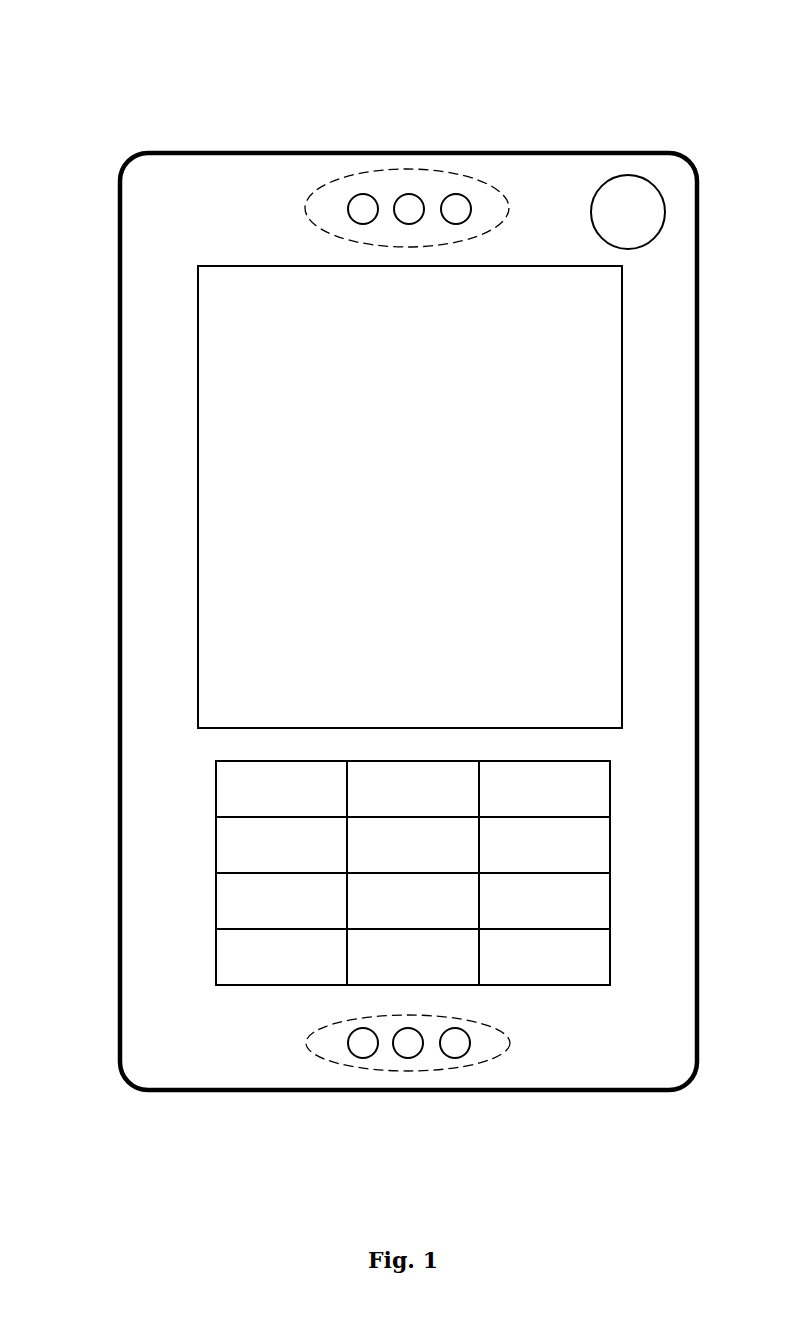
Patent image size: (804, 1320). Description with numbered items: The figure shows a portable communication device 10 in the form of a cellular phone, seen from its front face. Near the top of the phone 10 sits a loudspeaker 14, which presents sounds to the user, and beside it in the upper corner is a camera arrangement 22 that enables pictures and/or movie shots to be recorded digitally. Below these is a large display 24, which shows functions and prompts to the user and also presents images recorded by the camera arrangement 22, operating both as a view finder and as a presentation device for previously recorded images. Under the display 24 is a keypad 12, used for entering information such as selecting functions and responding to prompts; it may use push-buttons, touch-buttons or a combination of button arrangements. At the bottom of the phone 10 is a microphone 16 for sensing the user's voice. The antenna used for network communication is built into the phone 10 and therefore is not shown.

The portable communication device 10 is at (177, 97).
The keypad 12 is at (236, 796).
The loudspeaker 14 is at (363, 174).
The microphone 16 is at (335, 1062).
The camera arrangement 22 is at (617, 186).
The display 24 is at (212, 337).